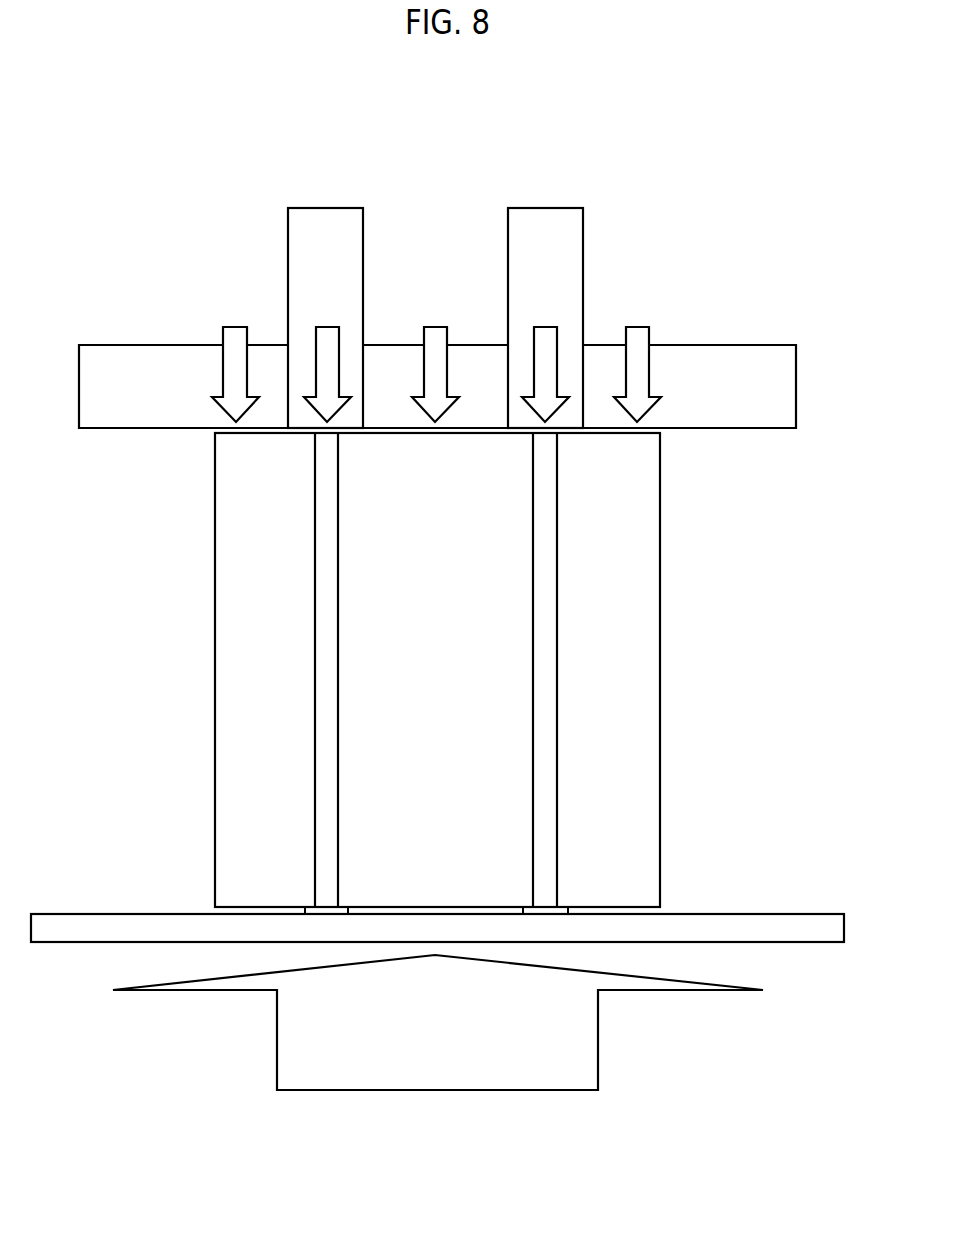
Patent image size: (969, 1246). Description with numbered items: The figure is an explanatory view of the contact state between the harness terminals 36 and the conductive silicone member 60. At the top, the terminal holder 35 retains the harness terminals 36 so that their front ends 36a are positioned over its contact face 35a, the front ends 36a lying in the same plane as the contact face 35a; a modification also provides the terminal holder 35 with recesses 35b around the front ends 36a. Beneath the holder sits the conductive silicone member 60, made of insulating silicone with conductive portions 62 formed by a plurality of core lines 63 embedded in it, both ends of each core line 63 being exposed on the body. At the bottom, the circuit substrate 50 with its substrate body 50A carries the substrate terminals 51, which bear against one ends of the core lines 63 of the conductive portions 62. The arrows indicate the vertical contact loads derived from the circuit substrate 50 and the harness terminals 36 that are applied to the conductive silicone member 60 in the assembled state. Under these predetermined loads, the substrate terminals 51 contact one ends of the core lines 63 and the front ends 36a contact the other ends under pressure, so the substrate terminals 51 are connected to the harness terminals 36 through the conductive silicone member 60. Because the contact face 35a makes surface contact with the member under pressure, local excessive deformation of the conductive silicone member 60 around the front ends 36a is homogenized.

The terminal holder 35 is at (688, 358).
The contact face 35a is at (724, 430).
The recesses 35b is at (383, 428).
The harness terminals 36 is at (506, 243).
The front ends 36a is at (310, 432).
The conductive silicone member 60 is at (165, 537).
The core lines 63 is at (325, 625).
The conductive portions 62 is at (305, 693).
The substrate terminals 51 is at (330, 905).
The substrate body 50A is at (820, 914).
The circuit substrate 50 is at (818, 952).